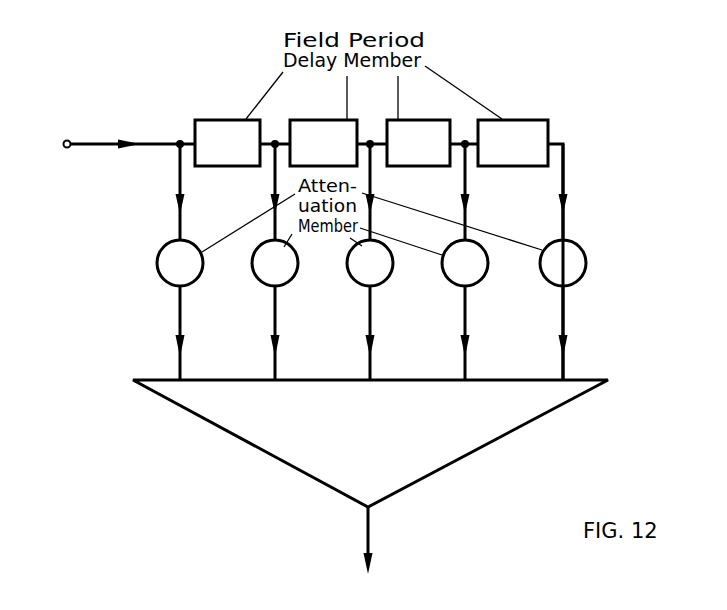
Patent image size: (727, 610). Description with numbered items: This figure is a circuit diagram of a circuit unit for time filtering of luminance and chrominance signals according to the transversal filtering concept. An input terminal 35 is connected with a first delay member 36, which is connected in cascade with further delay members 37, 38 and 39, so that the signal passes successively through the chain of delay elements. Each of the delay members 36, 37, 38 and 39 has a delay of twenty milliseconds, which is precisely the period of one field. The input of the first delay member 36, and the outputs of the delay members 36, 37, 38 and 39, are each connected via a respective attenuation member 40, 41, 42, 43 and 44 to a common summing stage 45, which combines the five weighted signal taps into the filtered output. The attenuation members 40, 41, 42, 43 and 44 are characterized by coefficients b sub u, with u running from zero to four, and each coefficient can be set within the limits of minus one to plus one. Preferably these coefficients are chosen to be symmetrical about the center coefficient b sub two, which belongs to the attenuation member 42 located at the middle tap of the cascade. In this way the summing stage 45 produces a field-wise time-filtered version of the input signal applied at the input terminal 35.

The input terminal 35 is at (117, 156).
The first delay member 36 is at (208, 120).
The delay member 37 is at (300, 120).
The delay member 38 is at (436, 120).
The delay member 39 is at (531, 120).
The attenuation member 40 is at (160, 272).
The attenuation member 41 is at (255, 272).
The attenuation member 42 is at (350, 272).
The attenuation member 43 is at (442, 272).
The attenuation member 44 is at (541, 272).
The summing stage 45 is at (535, 421).